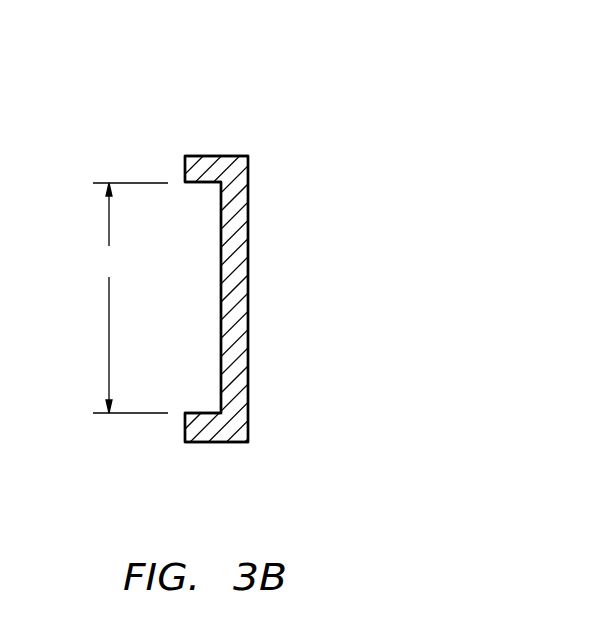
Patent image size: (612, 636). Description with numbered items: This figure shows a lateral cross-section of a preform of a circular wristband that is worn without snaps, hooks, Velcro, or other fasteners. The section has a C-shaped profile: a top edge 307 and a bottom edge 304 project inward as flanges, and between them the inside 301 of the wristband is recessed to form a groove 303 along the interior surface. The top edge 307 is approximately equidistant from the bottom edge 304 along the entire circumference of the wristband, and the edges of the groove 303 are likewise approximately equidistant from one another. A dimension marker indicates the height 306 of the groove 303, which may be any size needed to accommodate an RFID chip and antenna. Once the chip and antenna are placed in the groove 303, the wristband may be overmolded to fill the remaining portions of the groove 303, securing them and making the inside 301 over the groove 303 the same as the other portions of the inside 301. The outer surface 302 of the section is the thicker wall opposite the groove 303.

The inside 301 is at (185, 157).
The outer surface 302 is at (248, 288).
The groove 303 is at (221, 273).
The bottom edge 304 is at (220, 442).
The height 306 is at (129, 298).
The top edge 307 is at (220, 155).